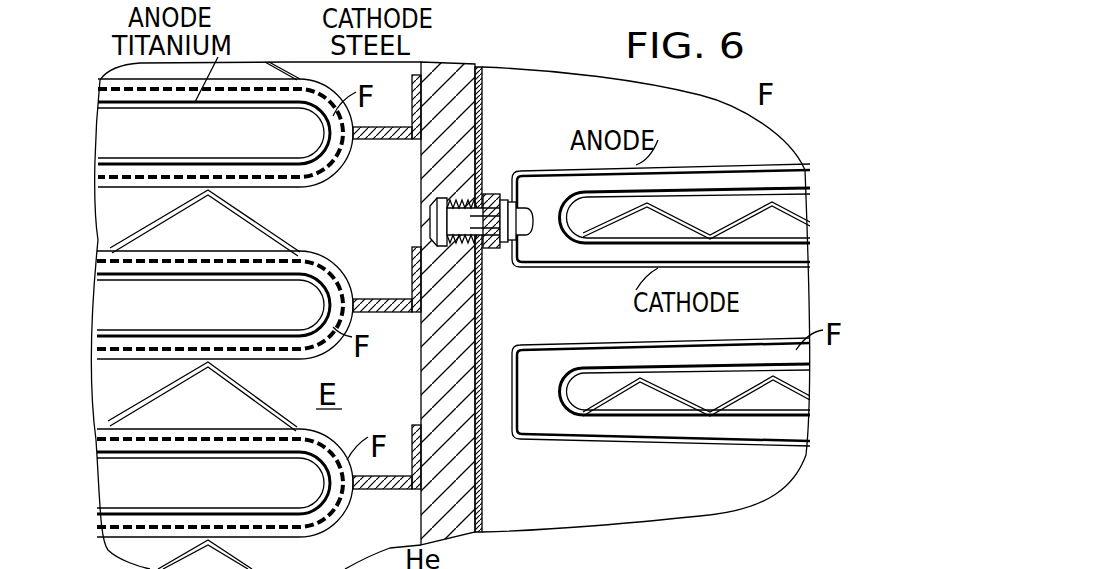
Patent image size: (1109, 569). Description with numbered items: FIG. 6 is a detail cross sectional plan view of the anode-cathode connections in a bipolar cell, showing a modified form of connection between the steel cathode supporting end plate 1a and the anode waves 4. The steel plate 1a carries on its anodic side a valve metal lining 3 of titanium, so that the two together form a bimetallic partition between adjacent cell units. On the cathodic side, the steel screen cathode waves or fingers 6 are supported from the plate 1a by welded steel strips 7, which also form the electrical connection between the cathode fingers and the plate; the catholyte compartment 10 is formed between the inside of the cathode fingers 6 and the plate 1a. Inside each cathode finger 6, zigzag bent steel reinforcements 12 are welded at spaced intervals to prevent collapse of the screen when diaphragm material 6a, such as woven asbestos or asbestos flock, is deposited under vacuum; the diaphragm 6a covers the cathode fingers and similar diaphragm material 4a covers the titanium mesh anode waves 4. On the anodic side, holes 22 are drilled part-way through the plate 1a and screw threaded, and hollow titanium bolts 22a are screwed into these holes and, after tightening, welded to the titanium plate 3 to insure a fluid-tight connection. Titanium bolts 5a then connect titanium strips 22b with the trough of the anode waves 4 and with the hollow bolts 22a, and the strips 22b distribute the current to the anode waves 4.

The steel cathode supporting end plate 1a is at (456, 88).
The valve metal lining 3 is at (483, 118).
The anode wave 4 is at (194, 283).
The diaphragm material 4a is at (150, 103).
The titanium bolt 5a is at (540, 258).
The cathode wave 6 is at (320, 242).
The diaphragm material 6a is at (735, 165).
The steel strip 7 is at (388, 306).
The catholyte compartment 10 is at (401, 242).
The zigzag bent steel reinforcement 12 is at (262, 208).
The hole 22 is at (447, 194).
The hollow titanium bolt 22a is at (490, 192).
The titanium strip 22b is at (497, 250).